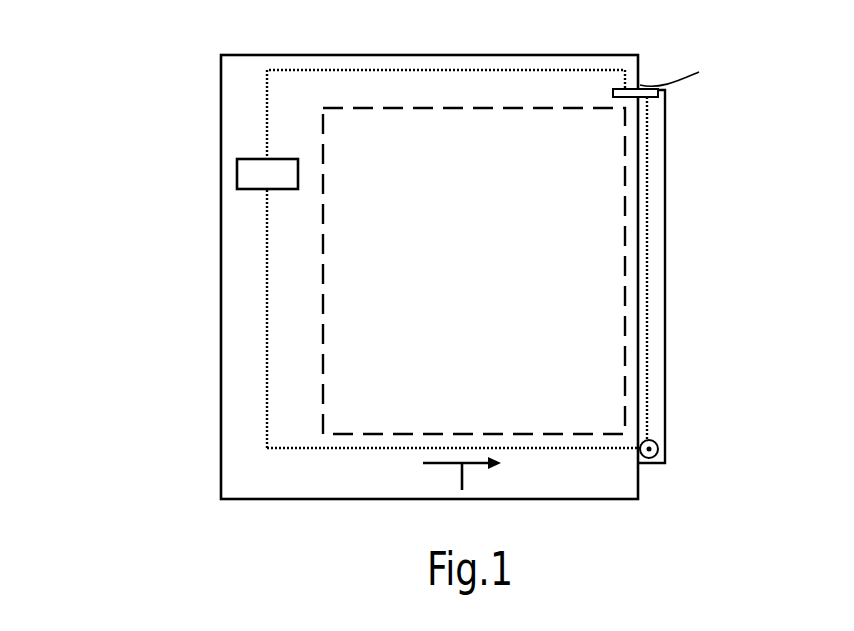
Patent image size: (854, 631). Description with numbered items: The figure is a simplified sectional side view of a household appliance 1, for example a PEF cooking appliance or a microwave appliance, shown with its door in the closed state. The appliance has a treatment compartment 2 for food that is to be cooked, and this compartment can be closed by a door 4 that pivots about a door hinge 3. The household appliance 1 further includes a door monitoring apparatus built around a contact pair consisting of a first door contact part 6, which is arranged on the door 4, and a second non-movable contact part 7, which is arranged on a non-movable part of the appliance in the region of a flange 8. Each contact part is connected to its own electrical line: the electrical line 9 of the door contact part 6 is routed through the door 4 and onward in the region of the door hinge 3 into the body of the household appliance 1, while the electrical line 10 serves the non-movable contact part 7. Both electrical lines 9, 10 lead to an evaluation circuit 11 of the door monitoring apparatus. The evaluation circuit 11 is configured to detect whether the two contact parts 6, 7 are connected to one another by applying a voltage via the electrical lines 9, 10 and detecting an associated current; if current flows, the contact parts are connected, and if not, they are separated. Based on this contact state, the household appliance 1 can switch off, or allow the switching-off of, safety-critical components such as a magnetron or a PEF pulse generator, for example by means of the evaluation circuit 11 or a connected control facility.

The household appliance 1 is at (165, 85).
The treatment compartment 2 is at (615, 272).
The door hinge 3 is at (659, 448).
The door 4 is at (666, 182).
The door contact part 6 is at (677, 71).
The non-movable contact part 7 is at (626, 106).
The flange 8 is at (638, 80).
The electrical line 9 is at (648, 318).
The electrical line 10 is at (516, 70).
The evaluation circuit 11 is at (279, 190).